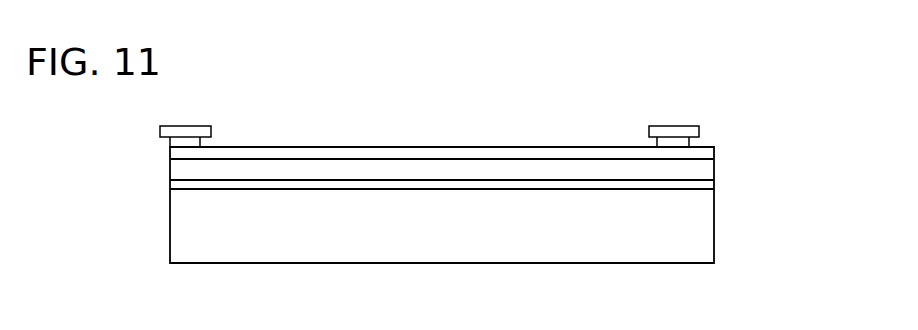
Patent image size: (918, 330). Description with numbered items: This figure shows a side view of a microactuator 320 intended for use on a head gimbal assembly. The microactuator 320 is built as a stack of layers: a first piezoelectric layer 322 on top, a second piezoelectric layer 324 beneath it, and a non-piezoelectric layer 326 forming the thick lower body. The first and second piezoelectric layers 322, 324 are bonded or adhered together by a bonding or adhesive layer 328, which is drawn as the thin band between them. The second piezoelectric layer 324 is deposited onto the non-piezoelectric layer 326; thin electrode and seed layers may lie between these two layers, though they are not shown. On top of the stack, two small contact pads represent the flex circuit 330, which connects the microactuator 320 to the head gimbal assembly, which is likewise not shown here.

The microactuator 320 is at (756, 89).
The first piezoelectric layer 322 is at (510, 146).
The second piezoelectric layer 324 is at (715, 185).
The non-piezoelectric layer 326 is at (169, 248).
The bonding or adhesive layer 328 is at (169, 169).
The flex circuit 330 is at (159, 134).